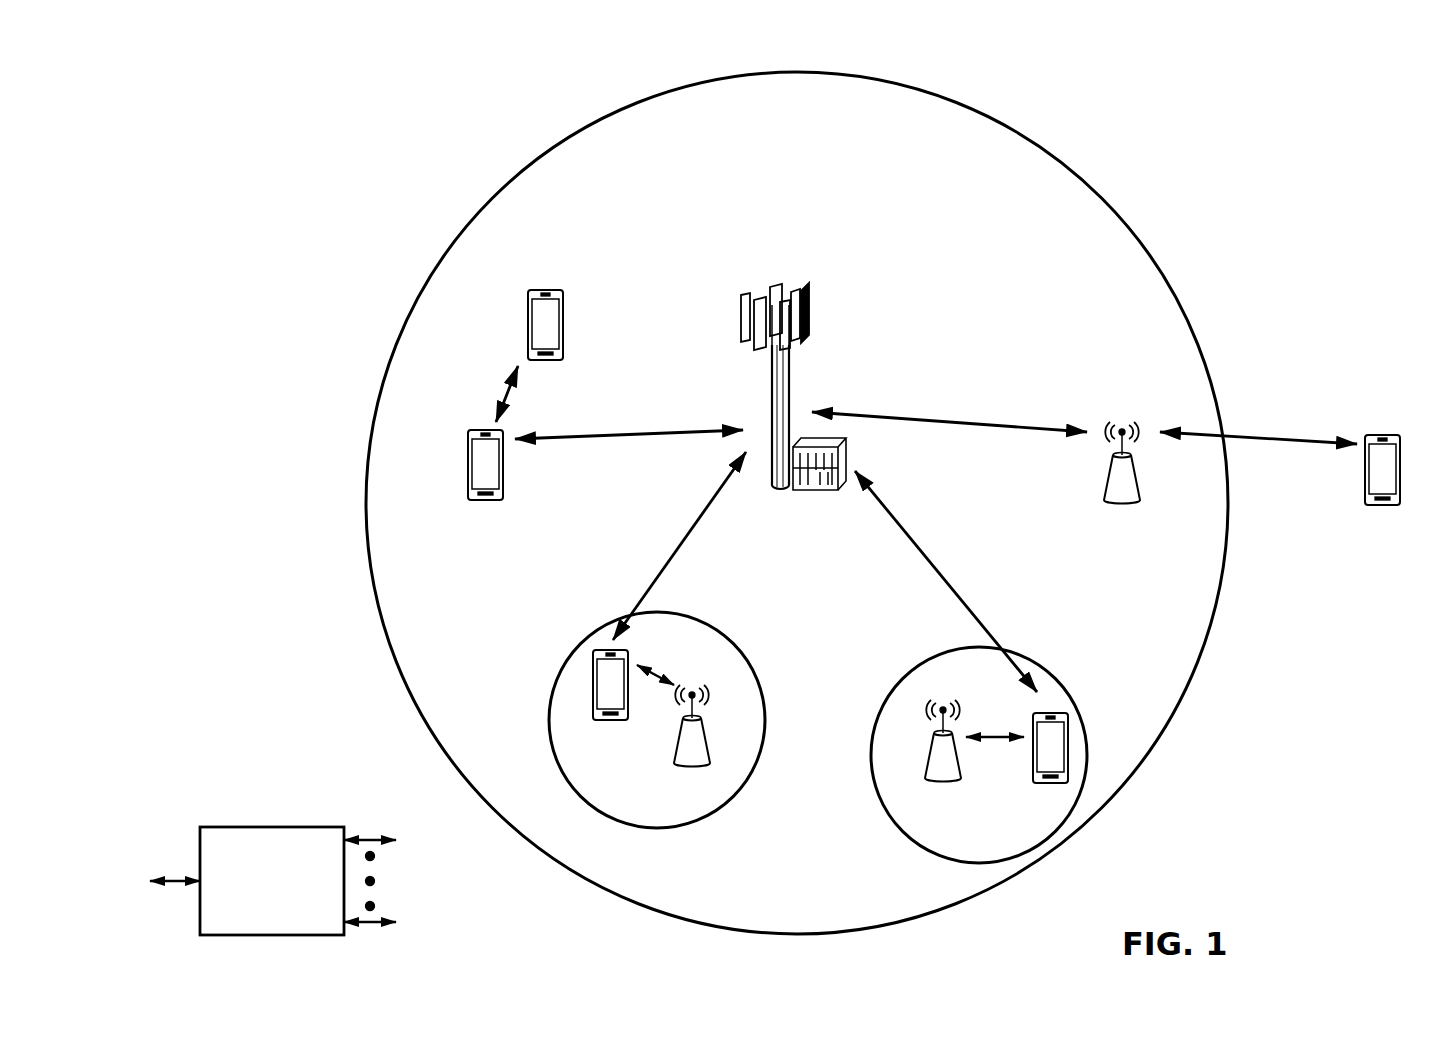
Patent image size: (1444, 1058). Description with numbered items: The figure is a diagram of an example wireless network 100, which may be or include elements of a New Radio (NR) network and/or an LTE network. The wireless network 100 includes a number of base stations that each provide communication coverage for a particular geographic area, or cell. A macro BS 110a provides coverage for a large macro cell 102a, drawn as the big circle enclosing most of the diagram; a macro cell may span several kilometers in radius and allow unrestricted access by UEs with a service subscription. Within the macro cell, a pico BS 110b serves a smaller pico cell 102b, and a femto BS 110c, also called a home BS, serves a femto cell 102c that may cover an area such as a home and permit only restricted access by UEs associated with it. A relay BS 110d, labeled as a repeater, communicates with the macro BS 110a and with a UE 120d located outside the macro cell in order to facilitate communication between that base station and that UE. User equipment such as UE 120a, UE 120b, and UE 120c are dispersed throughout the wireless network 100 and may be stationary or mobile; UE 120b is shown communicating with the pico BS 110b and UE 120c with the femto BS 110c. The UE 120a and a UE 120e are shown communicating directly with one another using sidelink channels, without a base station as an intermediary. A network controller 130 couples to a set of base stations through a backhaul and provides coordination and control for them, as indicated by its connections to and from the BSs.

The wireless network 100 is at (180, 66).
The macro cell 102a is at (1088, 181).
The pico cell 102b is at (748, 658).
The femto cell 102c is at (915, 666).
The macro BS 110a is at (789, 281).
The pico BS 110b is at (717, 758).
The femto BS 110c is at (924, 770).
The relay BS 110d is at (1124, 425).
The UE 120a is at (468, 462).
The UE 120b is at (597, 720).
The UE 120c is at (1035, 784).
The UE 120d is at (1396, 434).
The UE 120e is at (530, 312).
The network controller 130 is at (270, 826).